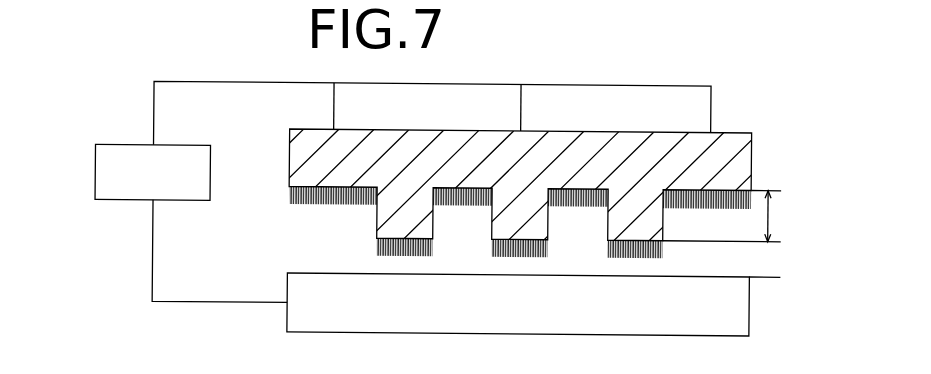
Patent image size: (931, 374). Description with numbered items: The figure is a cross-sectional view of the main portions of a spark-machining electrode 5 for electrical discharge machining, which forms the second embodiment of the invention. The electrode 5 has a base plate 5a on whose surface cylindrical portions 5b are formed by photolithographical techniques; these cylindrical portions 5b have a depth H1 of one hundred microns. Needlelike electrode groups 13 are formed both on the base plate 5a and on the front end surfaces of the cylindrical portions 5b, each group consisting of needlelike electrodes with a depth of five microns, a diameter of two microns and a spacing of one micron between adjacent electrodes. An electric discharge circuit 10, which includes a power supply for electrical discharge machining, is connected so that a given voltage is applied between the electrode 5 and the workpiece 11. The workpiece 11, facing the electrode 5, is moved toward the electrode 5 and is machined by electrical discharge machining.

The electric discharge circuit 10 is at (115, 148).
The spark-machining electrode 5 is at (503, 181).
The base plate 5a is at (740, 160).
The cylindrical portions 5b is at (377, 225).
The needlelike electrode groups 13 is at (750, 203).
The depth of the cylindrical portions H1 is at (772, 223).
The workpiece 11 is at (747, 300).